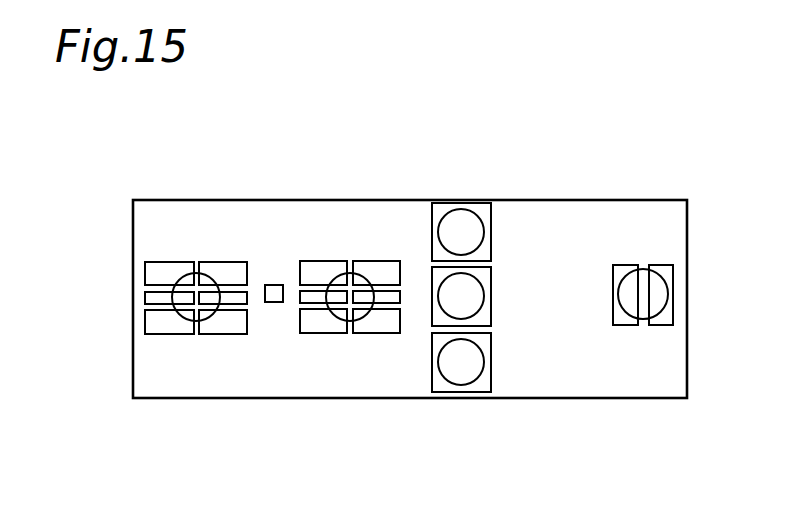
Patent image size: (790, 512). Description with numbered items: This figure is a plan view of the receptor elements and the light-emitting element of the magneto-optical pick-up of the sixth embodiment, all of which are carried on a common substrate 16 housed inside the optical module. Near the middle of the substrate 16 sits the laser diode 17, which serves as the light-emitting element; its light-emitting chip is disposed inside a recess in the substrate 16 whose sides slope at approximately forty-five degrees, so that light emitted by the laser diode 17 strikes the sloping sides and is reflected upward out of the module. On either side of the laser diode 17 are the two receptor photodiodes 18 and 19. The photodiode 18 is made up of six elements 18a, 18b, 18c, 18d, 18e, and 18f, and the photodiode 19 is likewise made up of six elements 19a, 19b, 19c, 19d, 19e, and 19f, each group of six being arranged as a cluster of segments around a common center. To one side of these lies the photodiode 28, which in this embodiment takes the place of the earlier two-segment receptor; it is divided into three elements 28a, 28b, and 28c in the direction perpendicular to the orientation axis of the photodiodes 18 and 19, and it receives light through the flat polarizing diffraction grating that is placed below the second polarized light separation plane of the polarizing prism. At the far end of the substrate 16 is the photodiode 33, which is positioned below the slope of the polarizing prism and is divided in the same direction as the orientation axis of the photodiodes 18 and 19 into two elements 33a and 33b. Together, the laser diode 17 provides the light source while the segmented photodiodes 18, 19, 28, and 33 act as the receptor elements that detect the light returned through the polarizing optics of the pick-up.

The substrate 16 is at (133, 209).
The laser diode 17 is at (274, 285).
The photodiode 18 is at (186, 245).
The element of photodiode 18 18a is at (161, 267).
The element of photodiode 18 18b is at (152, 295).
The element of photodiode 18 18c is at (150, 321).
The element of photodiode 18 18d is at (223, 268).
The element of photodiode 18 18e is at (231, 318).
The element of photodiode 18 18f is at (213, 327).
The photodiode 19 is at (346, 245).
The element of photodiode 19 19a is at (382, 272).
The element of photodiode 19 19b is at (390, 297).
The element of photodiode 19 19c is at (377, 318).
The element of photodiode 19 19d is at (319, 268).
The element of photodiode 19 19e is at (313, 297).
The element of photodiode 19 19f is at (323, 327).
The photodiode 28 is at (456, 200).
The element of photodiode 28 28a is at (485, 254).
The element of photodiode 28 28b is at (486, 320).
The element of photodiode 28 28c is at (486, 383).
The photodiode 33 is at (642, 255).
The element of photodiode 33 33a is at (668, 320).
The element of photodiode 33 33b is at (621, 318).